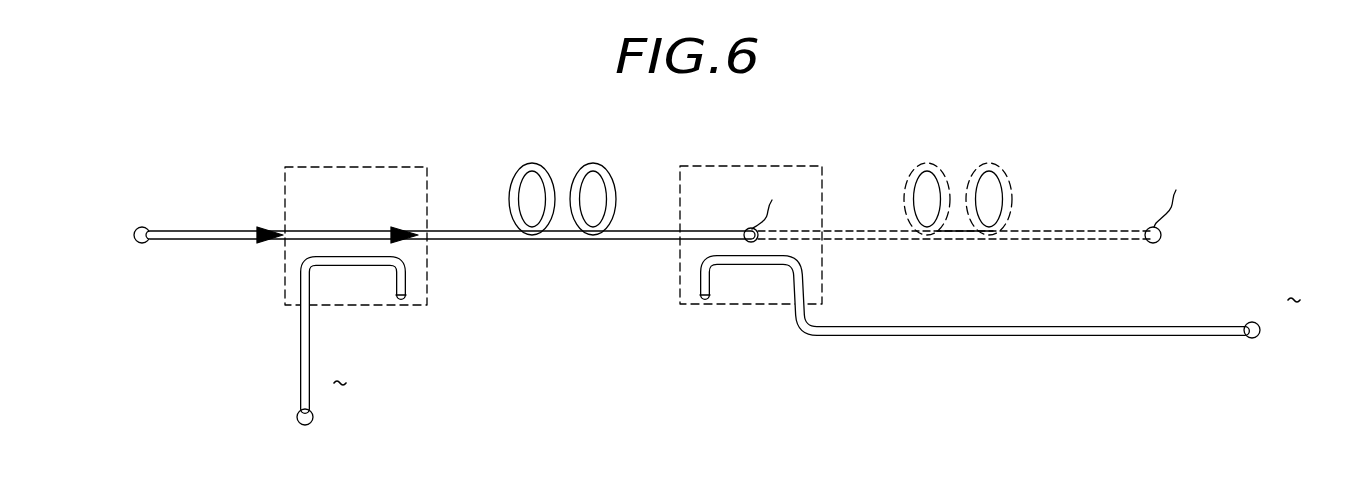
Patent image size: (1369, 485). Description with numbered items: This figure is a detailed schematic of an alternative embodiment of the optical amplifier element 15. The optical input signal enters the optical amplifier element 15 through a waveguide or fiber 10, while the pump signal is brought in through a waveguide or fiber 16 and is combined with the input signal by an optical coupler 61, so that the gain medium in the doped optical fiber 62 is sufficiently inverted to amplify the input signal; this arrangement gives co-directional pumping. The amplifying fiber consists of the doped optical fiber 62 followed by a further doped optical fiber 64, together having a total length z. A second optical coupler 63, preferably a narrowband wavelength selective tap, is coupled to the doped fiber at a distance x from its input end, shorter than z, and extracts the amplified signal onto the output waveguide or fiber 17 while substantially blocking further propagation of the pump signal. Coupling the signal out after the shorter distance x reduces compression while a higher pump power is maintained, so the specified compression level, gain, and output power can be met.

The waveguide or fiber 10 is at (190, 241).
The optical amplifier element 15 is at (581, 363).
The waveguide or fiber 16 is at (300, 358).
The waveguide or fiber 17 is at (1058, 332).
The optical coupler 61 is at (355, 167).
The doped optical fiber 62 is at (593, 163).
The optical coupler 63 is at (745, 166).
The doped optical fiber 64 is at (987, 162).